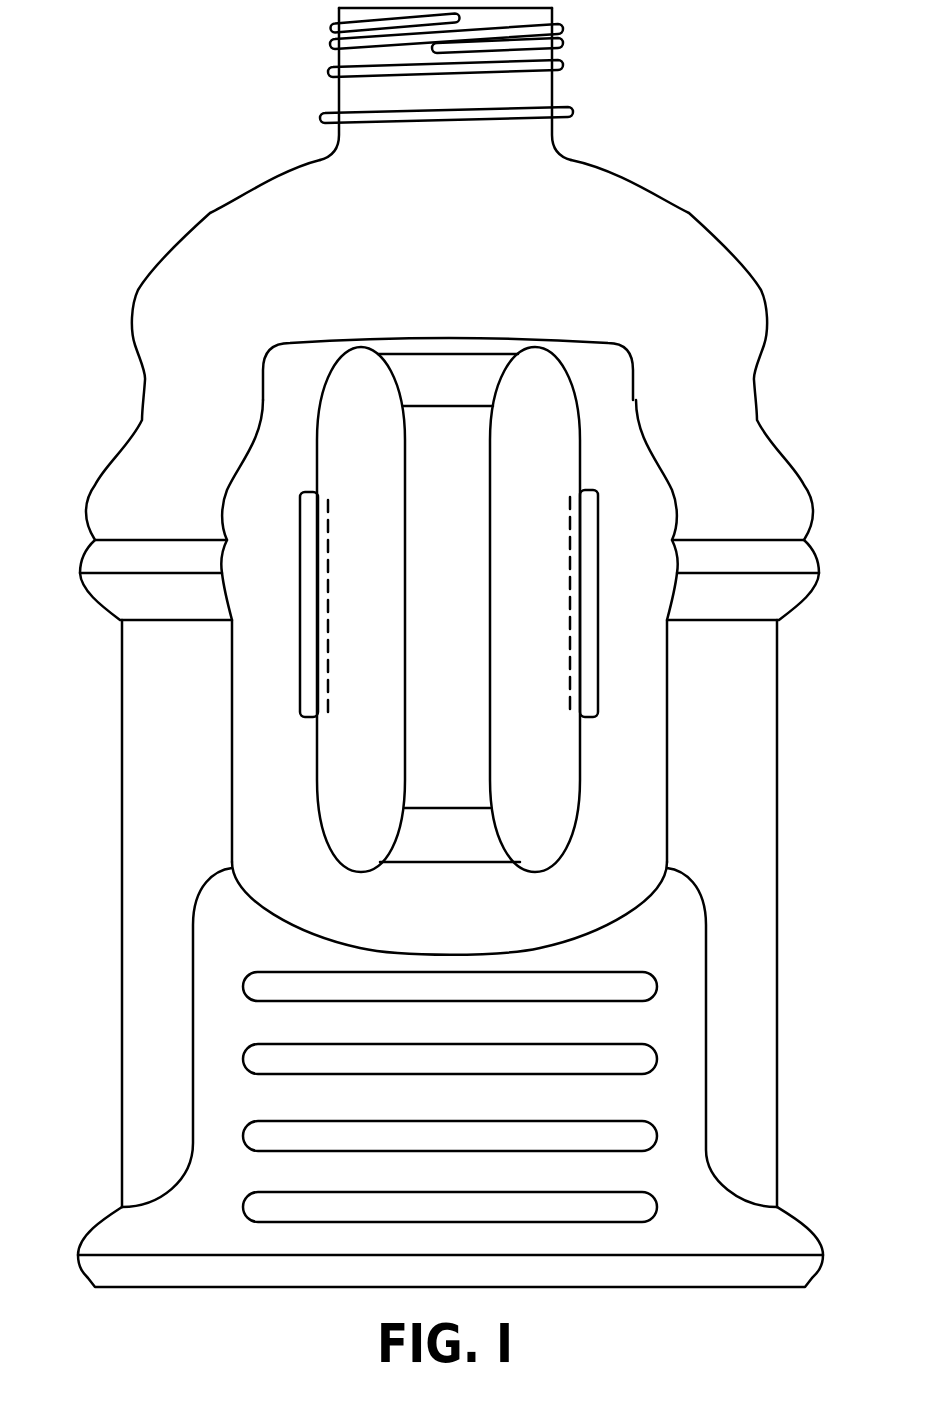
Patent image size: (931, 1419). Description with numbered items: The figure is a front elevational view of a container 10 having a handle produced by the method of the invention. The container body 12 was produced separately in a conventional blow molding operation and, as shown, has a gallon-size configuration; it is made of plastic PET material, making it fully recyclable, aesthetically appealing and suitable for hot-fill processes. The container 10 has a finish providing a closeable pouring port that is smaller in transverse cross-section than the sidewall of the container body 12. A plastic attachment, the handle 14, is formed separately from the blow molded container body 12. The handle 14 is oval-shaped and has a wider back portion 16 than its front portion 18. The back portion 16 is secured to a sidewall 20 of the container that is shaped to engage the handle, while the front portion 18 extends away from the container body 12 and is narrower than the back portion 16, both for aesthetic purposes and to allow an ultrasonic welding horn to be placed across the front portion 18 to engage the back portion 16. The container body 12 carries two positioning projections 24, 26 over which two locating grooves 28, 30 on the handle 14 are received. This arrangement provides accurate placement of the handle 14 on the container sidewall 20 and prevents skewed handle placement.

The container 10 is at (208, 212).
The container body 12 is at (682, 205).
The handle 14 is at (575, 777).
The back portion 16 is at (378, 788).
The front portion 18 is at (470, 760).
The sidewall 20 is at (248, 697).
The positioning projection 24 is at (300, 517).
The positioning projection 26 is at (598, 490).
The locating groove 28 is at (328, 500).
The locating groove 30 is at (570, 497).